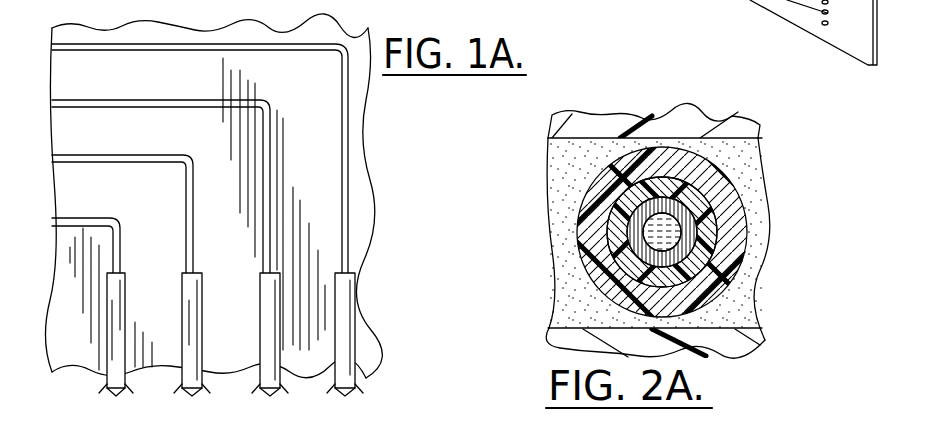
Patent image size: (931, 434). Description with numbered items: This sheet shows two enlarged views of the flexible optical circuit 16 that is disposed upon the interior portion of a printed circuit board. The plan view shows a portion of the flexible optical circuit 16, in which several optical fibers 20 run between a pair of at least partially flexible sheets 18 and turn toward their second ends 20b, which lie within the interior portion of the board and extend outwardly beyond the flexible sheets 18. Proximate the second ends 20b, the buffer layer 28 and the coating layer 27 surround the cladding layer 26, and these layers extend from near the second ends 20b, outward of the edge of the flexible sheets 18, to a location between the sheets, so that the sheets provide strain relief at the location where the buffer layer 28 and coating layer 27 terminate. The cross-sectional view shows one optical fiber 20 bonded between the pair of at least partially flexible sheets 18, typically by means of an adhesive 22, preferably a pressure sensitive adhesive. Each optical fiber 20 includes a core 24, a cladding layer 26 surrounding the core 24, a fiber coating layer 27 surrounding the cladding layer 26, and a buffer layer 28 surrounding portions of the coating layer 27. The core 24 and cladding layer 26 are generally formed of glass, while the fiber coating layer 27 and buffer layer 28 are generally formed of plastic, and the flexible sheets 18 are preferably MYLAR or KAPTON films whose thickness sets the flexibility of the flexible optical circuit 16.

In FIG. 1A, the flexible optical circuit 16 is at (80, 352).
In FIG. 2A, the at least partially flexible sheets 18 is at (760, 125).
In FIG. 1A, the optical fibers 20 is at (368, 180).
In FIG. 2A, the optical fibers 20 is at (786, 208).
In FIG. 1A, the second ends 20b is at (345, 392).
In FIG. 2A, the adhesive 22 is at (738, 297).
In FIG. 2A, the core 24 is at (663, 230).
In FIG. 1A, the cladding layer 26 is at (348, 218).
In FIG. 2A, the cladding layer 26 is at (577, 275).
In FIG. 2A, the fiber coating layer 27 is at (603, 290).
In FIG. 1A, the buffer layer 28 is at (343, 303).
In FIG. 2A, the buffer layer 28 is at (597, 188).